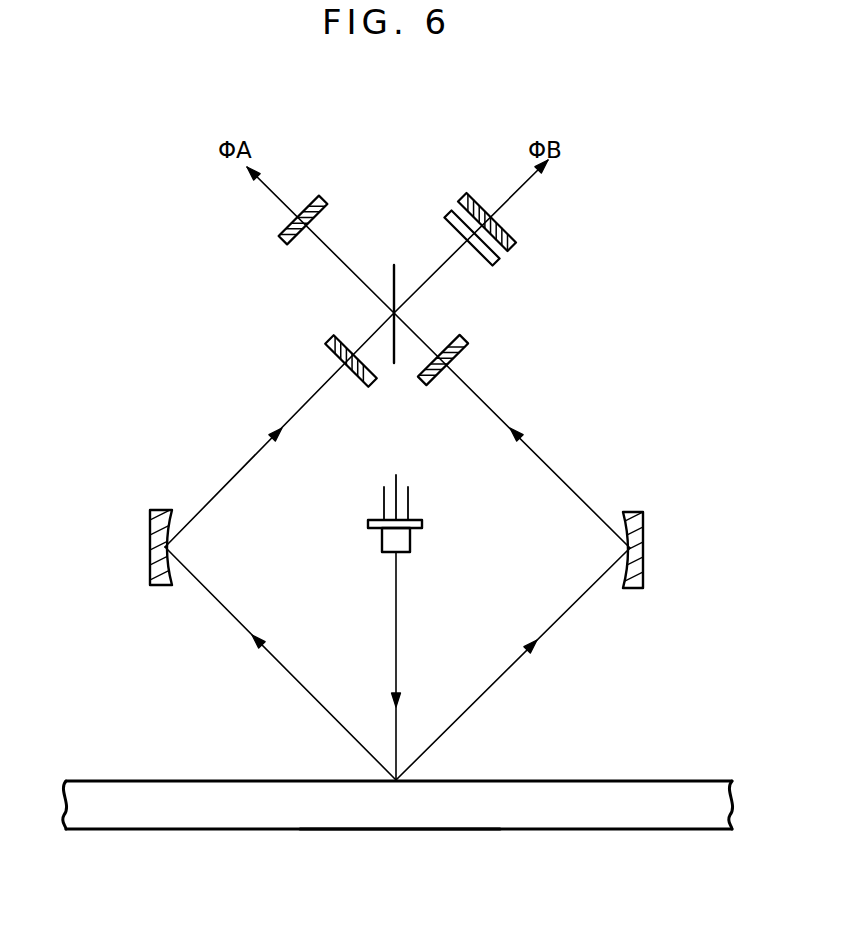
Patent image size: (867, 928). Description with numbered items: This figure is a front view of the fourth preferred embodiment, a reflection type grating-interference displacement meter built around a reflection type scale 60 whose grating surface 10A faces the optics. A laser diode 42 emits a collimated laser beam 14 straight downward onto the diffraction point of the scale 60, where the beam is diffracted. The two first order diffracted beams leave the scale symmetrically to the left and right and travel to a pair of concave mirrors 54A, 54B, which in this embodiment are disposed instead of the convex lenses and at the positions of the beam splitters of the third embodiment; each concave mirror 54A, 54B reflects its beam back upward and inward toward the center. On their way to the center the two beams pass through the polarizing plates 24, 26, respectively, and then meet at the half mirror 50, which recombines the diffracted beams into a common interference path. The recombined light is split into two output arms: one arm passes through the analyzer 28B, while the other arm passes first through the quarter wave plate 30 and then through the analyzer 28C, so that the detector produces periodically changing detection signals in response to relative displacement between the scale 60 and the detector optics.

The surface of object 10A is at (663, 780).
The laser beam 14 is at (398, 622).
The polarizing plate 24 is at (330, 340).
The polarizing plate 26 is at (462, 343).
The analyzer 28B is at (283, 234).
The analyzer 28C is at (512, 232).
The quarter wave plate 30 is at (497, 263).
The laser diode 42 is at (411, 538).
The half mirror 50 is at (392, 270).
The concave mirror 54A is at (160, 509).
The concave mirror 54B is at (628, 511).
The reflection type scale 60 is at (707, 830).